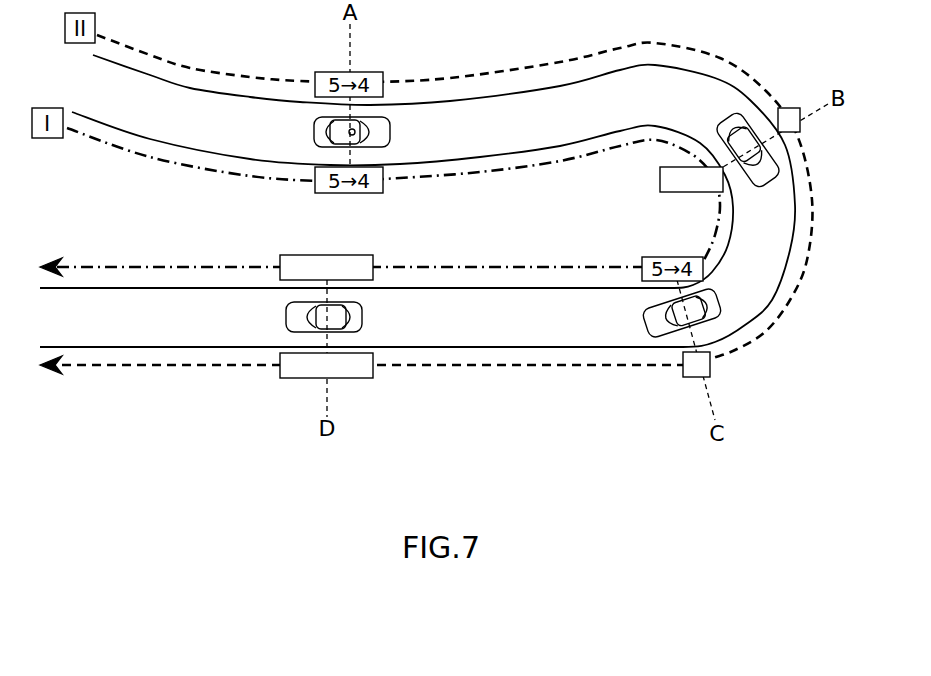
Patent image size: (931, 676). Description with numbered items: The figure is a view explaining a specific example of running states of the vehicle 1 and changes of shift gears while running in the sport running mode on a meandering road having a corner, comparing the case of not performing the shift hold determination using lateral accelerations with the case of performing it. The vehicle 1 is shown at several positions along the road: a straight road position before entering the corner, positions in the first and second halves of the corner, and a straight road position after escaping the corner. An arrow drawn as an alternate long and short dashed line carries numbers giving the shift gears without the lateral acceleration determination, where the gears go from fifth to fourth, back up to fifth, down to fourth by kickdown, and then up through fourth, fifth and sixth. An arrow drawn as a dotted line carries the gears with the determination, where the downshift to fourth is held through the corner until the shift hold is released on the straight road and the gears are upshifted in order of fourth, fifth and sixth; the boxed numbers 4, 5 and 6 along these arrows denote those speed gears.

The vehicle 1 is at (399, 117).
The fourth gear position 4 is at (741, 242).
The fifth gear position 5 is at (691, 179).
The sixth gear position 6 is at (326, 316).